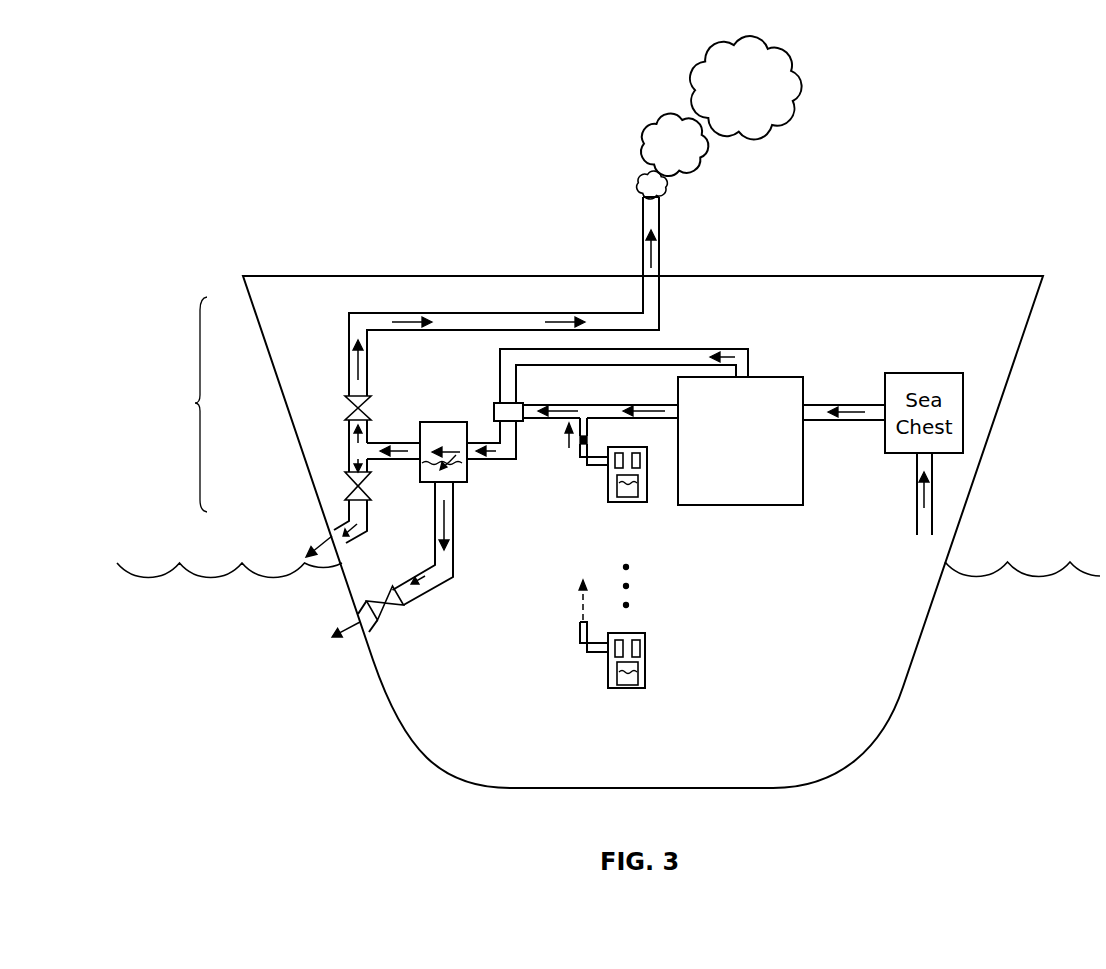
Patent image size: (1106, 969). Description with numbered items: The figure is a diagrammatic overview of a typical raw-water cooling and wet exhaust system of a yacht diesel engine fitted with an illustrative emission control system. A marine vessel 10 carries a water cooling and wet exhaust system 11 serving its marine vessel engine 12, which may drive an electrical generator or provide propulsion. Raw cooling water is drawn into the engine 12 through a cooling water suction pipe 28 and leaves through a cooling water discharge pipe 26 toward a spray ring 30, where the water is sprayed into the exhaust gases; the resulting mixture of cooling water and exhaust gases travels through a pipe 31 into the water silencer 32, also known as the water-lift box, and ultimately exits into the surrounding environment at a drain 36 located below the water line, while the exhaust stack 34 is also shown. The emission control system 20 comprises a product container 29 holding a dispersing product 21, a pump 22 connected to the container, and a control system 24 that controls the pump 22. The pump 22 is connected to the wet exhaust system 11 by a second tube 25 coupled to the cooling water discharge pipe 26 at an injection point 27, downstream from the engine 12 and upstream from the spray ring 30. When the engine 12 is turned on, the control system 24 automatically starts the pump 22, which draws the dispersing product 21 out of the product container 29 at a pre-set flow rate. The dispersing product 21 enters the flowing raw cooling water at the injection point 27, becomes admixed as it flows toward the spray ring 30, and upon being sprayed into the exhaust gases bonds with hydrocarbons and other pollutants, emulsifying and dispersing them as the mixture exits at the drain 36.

The marine vessel 10 is at (1017, 362).
The water cooling and wet exhaust system 11 is at (186, 404).
The marine vessel engine 12 is at (780, 377).
The emission control system 20 is at (607, 490).
The dispersing product 21 is at (628, 493).
The pump 22 is at (615, 465).
The control system 24 is at (640, 462).
The second tube 25 is at (578, 455).
The cooling water discharge pipe 26 is at (605, 405).
The injection point 27 is at (587, 420).
The cooling water suction pipe 28 is at (835, 403).
The product container 29 is at (623, 502).
The spray ring 30 is at (494, 410).
The pipe 31 is at (508, 455).
The water silencer 32 is at (440, 422).
The return line 34 is at (683, 348).
The drain 36 is at (370, 622).